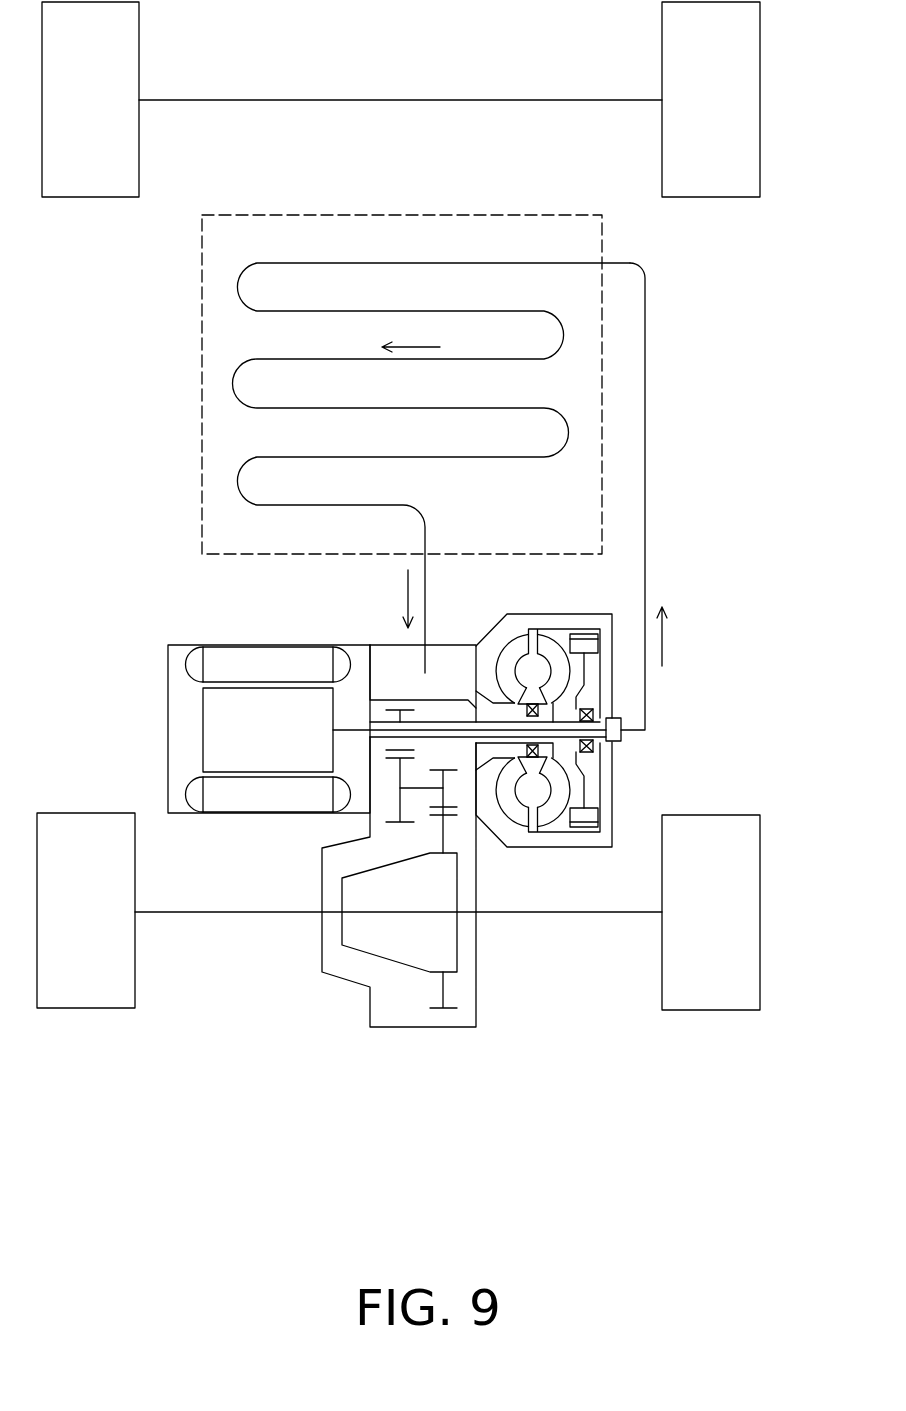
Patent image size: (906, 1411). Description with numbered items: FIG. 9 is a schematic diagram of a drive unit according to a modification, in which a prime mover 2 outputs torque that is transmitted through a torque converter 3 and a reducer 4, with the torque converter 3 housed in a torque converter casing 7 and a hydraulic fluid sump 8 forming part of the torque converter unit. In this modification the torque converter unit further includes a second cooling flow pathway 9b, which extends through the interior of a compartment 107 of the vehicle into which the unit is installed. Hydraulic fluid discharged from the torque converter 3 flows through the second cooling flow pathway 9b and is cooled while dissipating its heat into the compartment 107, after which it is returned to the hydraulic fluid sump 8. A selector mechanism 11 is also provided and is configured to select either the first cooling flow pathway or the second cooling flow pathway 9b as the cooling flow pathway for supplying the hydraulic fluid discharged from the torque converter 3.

The prime mover 2 is at (236, 636).
The torque converter 3 is at (517, 826).
The reducer 4 is at (376, 804).
The torque converter casing 7 is at (613, 785).
The hydraulic fluid sump 8 is at (451, 645).
The second cooling flow pathway 9b is at (456, 262).
The selector mechanism 11 is at (621, 737).
The compartment 107 is at (602, 243).